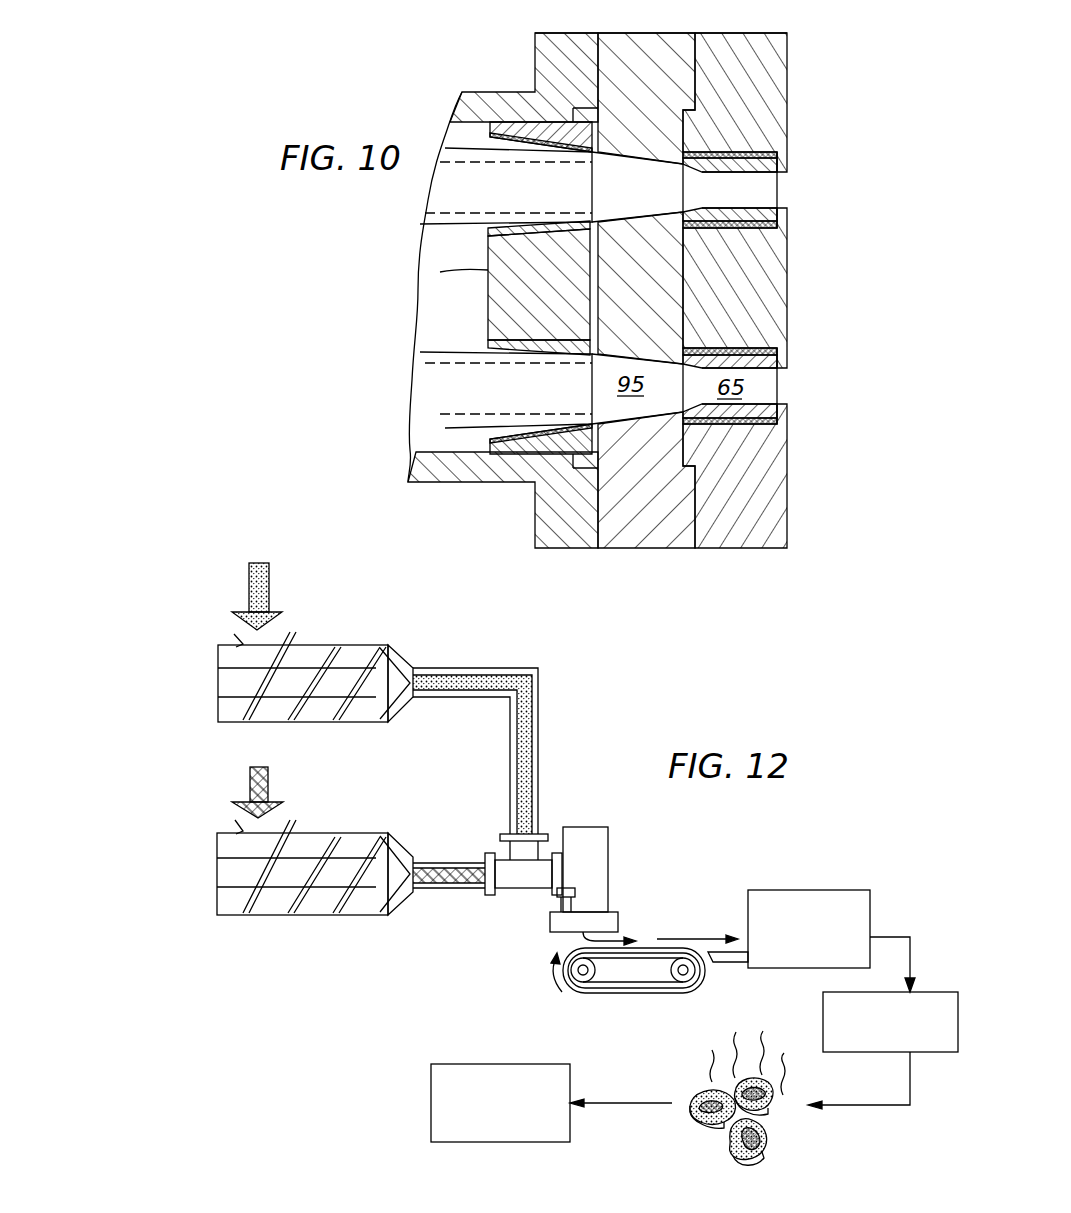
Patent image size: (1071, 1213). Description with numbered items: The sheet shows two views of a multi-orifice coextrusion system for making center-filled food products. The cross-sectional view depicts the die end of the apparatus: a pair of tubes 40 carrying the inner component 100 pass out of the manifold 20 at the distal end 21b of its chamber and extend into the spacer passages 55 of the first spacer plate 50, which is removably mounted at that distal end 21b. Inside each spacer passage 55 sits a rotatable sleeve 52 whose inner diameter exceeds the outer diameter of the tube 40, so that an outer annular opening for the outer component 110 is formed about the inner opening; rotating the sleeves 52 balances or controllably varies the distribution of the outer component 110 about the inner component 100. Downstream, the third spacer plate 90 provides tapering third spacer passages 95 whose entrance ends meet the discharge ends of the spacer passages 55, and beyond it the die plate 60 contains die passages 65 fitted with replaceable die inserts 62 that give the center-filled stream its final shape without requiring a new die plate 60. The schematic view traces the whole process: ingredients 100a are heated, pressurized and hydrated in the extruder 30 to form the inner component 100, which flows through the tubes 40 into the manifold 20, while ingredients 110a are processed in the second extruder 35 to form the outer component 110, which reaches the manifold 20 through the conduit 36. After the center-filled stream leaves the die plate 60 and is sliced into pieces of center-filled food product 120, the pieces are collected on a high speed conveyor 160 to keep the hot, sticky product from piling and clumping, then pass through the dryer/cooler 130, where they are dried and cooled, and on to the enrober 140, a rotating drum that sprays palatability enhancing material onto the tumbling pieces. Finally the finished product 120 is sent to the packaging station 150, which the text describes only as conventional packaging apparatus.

In FIG. 10, the manifold 20 is at (472, 92).
In FIG. 12, the manifold 20 is at (523, 880).
In FIG. 10, the distal end of chamber 21b is at (488, 297).
In FIG. 12, the extruder 30 is at (360, 833).
In FIG. 12, the extruder 35 is at (366, 645).
In FIG. 12, the conduit 36 is at (538, 745).
In FIG. 10, the tubes 40 is at (425, 224).
In FIG. 10, the first spacer plate 50 is at (440, 272).
In FIG. 10, the sleeves 52 is at (488, 233).
In FIG. 10, the spacer passages 55 is at (490, 131).
In FIG. 10, the die plate 60 is at (787, 112).
In FIG. 10, the die inserts 62 is at (787, 163).
In FIG. 10, the die passages 65 is at (742, 197).
In FIG. 10, the third spacer plate 90 is at (643, 33).
In FIG. 10, the third spacer passages 95 is at (644, 194).
In FIG. 12, the inner component 100 is at (455, 888).
In FIG. 12, the ingredients 100a is at (262, 767).
In FIG. 12, the outer component 110 is at (478, 668).
In FIG. 12, the ingredients 110a is at (258, 563).
In FIG. 12, the center-filled food product 120 is at (714, 1139).
In FIG. 12, the dryer/cooler 130 is at (798, 891).
In FIG. 12, the enrober 140 is at (946, 1052).
In FIG. 12, the packaging station 150 is at (431, 1112).
In FIG. 12, the conveyor 160 is at (638, 996).